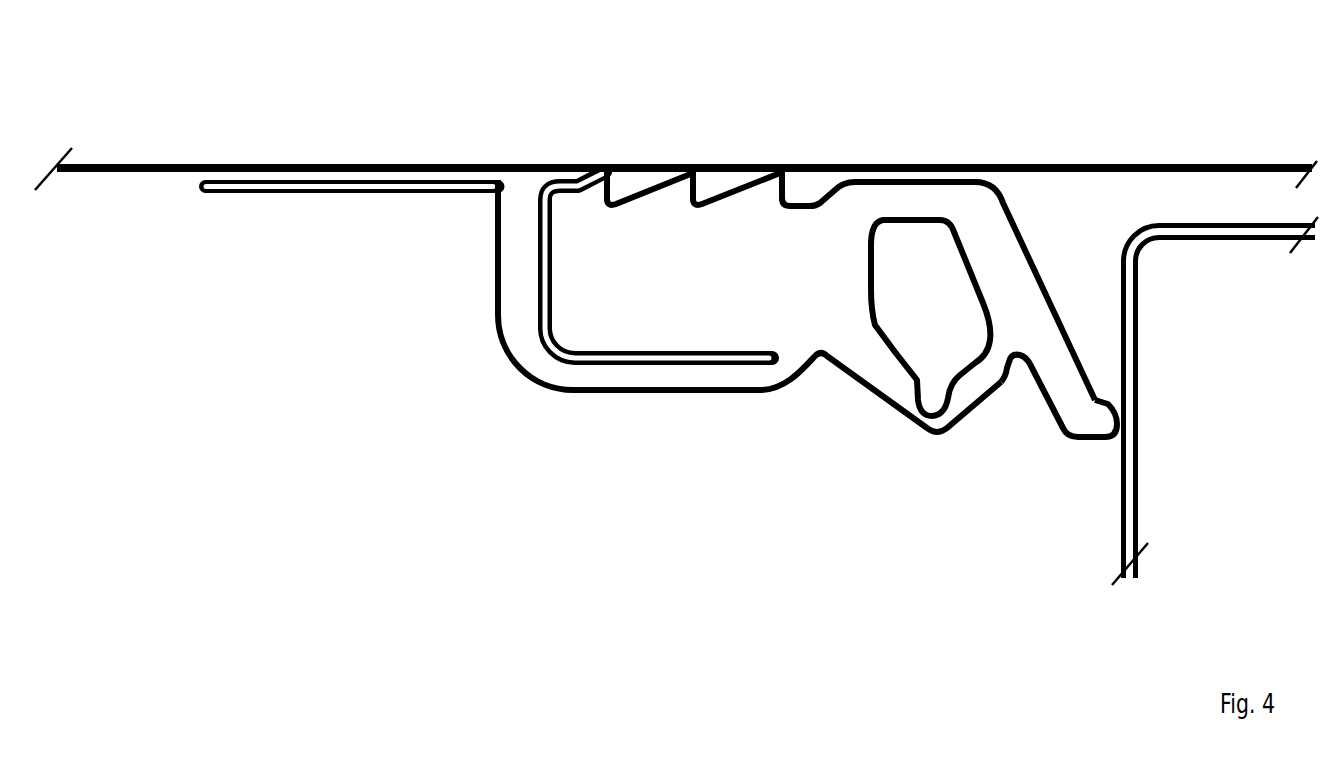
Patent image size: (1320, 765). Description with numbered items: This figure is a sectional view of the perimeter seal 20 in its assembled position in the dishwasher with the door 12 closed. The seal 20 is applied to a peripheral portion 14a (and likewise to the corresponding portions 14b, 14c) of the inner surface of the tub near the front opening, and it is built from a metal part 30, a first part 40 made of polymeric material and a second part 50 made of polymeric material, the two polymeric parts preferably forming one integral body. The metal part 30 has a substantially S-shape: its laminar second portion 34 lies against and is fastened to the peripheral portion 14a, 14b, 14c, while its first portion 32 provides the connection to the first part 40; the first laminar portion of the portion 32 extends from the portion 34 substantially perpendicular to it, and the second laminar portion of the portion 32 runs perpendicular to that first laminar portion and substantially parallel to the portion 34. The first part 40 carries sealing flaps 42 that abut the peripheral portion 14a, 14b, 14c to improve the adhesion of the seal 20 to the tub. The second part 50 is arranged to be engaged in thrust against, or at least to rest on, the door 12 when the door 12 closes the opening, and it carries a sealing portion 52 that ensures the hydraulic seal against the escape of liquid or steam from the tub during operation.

The door 12 is at (1227, 406).
The peripheral portion of the tub inner surface 14a is at (676, 106).
The peripheral portion of the tub inner surface 14b is at (676, 106).
The peripheral portion of the tub inner surface 14c is at (1072, 164).
The perimeter seal 20 is at (191, 498).
The metal part 30 is at (366, 314).
The first portion of the metal part 32 is at (535, 332).
The second portion of the metal part 34 is at (268, 184).
The first part made of polymeric material 40 is at (756, 459).
The sealing flaps 42 is at (767, 186).
The second part made of polymeric material 50 is at (944, 500).
The sealing portion 52 is at (1050, 482).